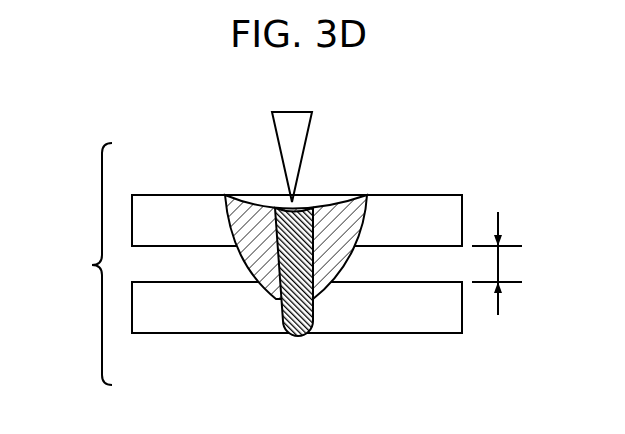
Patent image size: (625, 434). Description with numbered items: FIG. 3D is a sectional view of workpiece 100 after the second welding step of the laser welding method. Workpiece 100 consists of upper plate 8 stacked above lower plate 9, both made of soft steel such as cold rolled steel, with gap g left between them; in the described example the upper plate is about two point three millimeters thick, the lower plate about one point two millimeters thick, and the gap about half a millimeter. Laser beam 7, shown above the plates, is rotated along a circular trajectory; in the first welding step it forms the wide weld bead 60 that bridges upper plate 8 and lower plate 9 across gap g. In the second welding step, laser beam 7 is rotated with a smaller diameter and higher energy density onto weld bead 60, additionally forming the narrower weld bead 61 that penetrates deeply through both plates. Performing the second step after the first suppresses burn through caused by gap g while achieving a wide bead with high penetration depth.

The workpiece 100 is at (78, 264).
The upper plate 8 is at (179, 206).
The lower plate 9 is at (180, 318).
The laser beam 7 is at (272, 115).
The weld bead 60 is at (323, 272).
The weld bead 61 is at (292, 293).
The gap g is at (497, 263).